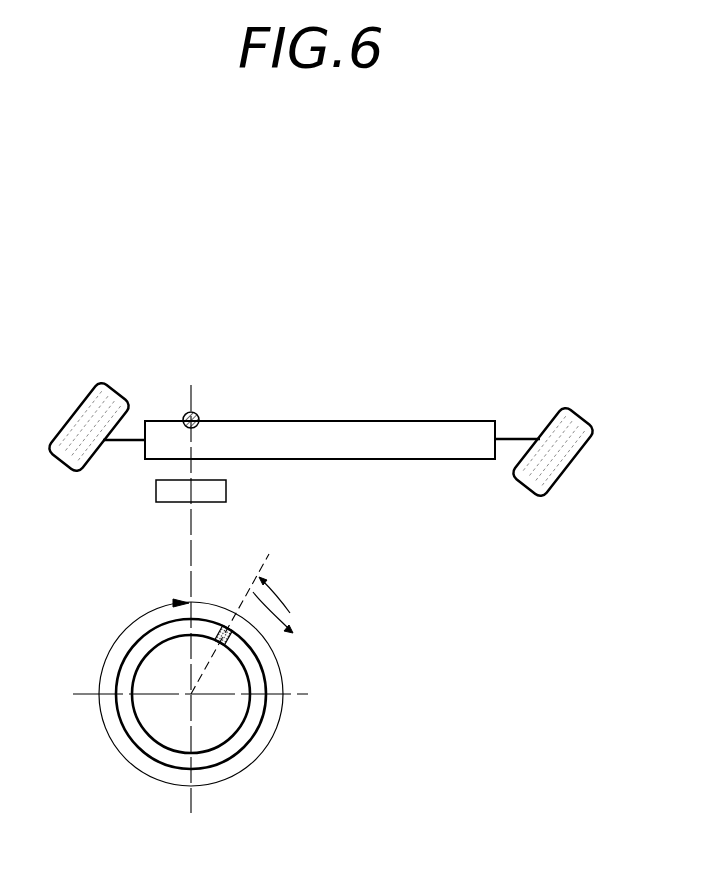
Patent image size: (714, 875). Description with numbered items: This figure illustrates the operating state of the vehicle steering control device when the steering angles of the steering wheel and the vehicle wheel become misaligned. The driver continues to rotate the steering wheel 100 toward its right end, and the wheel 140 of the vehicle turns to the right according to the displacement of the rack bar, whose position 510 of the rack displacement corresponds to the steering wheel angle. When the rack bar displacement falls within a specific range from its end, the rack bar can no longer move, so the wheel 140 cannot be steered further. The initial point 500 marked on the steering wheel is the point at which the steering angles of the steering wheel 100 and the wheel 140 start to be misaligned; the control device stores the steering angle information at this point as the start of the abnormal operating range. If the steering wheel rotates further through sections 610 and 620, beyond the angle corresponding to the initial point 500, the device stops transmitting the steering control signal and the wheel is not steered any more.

The steering wheel 100 is at (263, 663).
The wheel 140 is at (550, 422).
The initial point 500 is at (214, 625).
The position of the rack displacement 510 is at (195, 413).
The section 610 is at (281, 610).
The section 620 is at (285, 587).